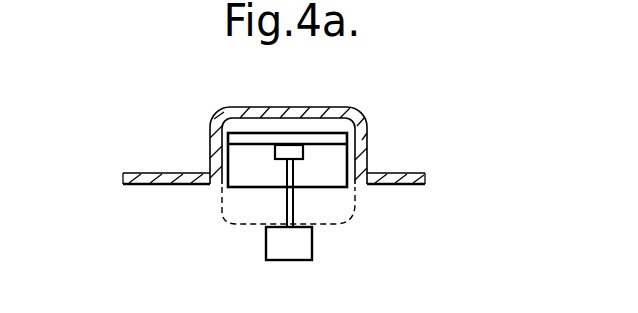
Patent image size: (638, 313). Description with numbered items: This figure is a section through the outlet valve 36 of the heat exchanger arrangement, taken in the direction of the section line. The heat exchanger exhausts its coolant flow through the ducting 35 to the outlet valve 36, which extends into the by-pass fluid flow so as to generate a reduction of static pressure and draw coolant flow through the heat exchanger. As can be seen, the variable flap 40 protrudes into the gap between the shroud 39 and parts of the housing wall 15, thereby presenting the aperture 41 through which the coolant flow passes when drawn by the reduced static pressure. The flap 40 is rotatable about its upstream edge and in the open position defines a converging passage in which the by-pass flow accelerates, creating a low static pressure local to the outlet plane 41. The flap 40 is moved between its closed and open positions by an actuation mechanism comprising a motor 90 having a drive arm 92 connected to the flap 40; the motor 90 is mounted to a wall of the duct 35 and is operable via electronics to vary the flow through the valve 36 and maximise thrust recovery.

The housing wall 15 is at (412, 172).
The ducting 35 is at (356, 203).
The outlet valve 36 is at (200, 152).
The shroud 39 is at (285, 106).
The variable flap 40 is at (329, 139).
The aperture 41 is at (256, 164).
The motor 90 is at (293, 262).
The drive arm 92 is at (251, 198).